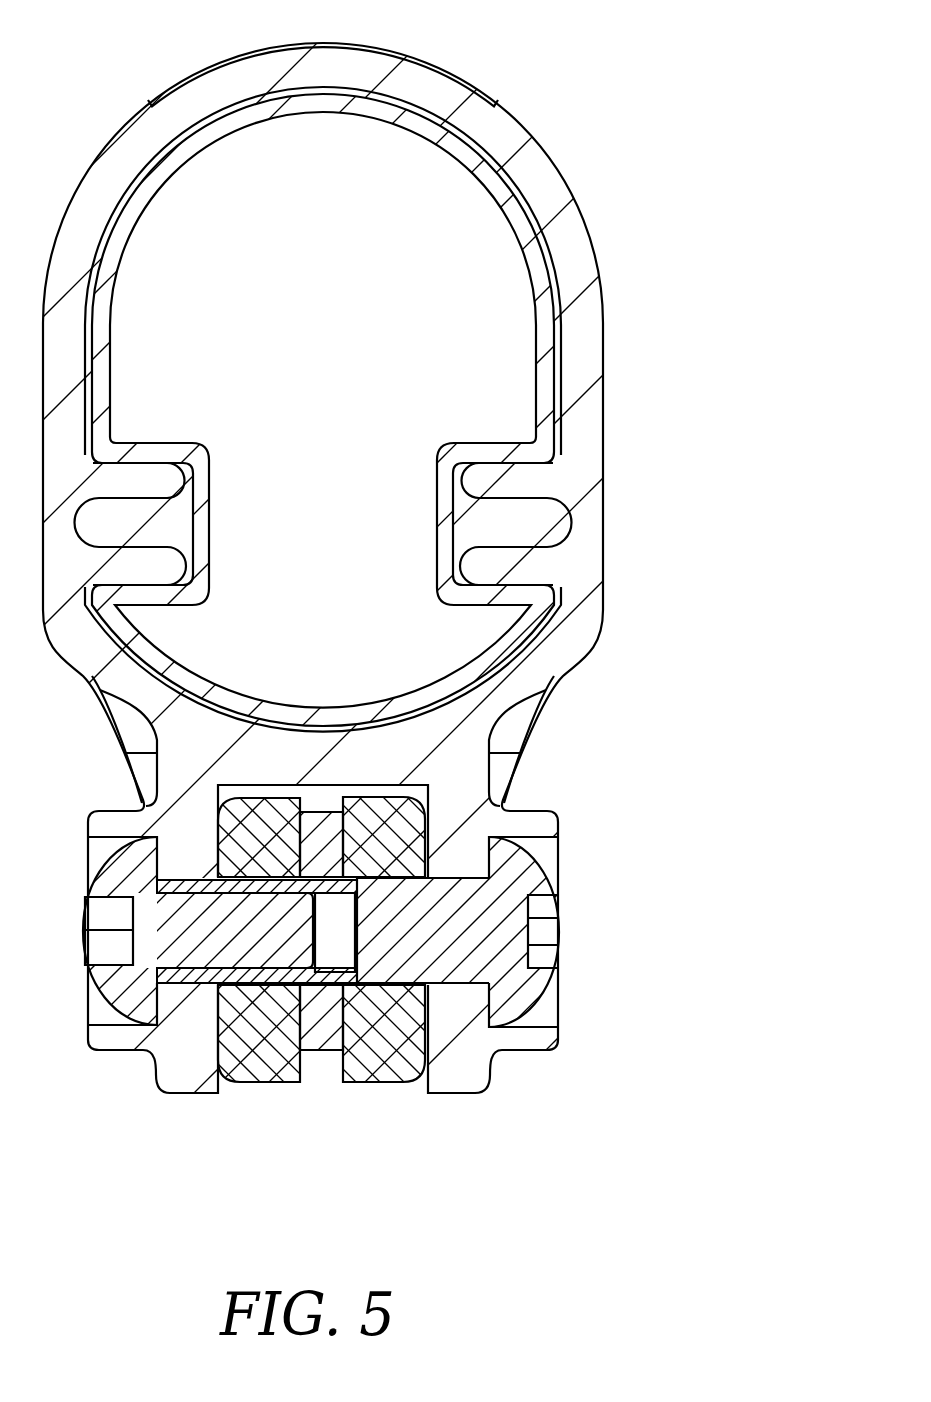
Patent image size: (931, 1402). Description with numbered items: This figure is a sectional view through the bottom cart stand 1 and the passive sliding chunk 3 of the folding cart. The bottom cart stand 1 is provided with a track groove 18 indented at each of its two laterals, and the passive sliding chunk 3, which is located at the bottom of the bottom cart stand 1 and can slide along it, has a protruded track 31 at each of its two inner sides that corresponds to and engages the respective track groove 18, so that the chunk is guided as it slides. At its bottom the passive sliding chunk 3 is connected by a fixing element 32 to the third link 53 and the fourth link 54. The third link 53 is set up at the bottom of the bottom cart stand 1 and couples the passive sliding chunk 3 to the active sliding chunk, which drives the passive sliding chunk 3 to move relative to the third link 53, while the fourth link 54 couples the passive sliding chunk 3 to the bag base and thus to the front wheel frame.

The bottom cart stand 1 is at (545, 338).
The passive sliding chunk 3 is at (580, 367).
The protruded track 31 is at (513, 482).
The track groove 18 is at (457, 530).
The fixing element 32 is at (525, 873).
The third link 53 is at (330, 1030).
The fourth link 54 is at (378, 1060).